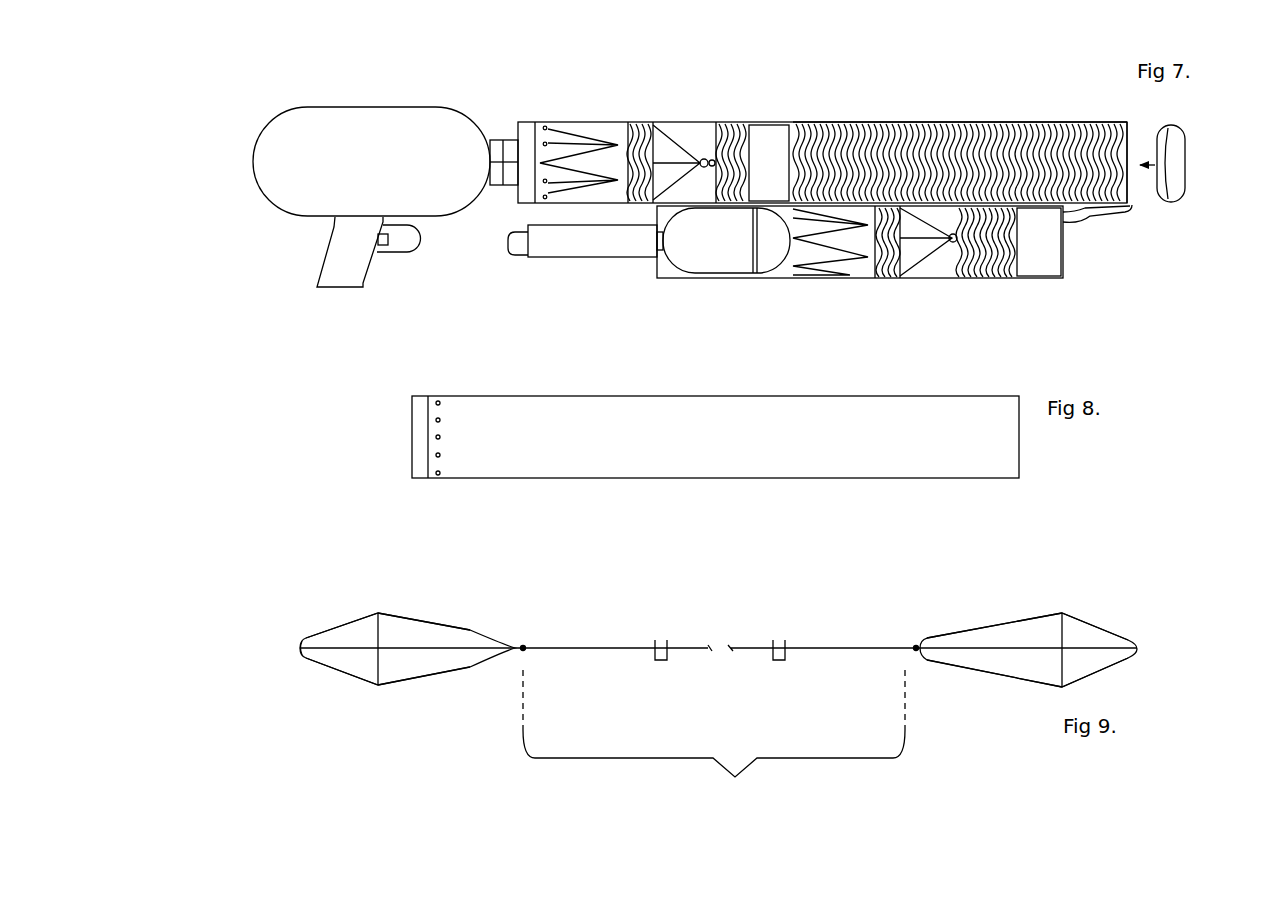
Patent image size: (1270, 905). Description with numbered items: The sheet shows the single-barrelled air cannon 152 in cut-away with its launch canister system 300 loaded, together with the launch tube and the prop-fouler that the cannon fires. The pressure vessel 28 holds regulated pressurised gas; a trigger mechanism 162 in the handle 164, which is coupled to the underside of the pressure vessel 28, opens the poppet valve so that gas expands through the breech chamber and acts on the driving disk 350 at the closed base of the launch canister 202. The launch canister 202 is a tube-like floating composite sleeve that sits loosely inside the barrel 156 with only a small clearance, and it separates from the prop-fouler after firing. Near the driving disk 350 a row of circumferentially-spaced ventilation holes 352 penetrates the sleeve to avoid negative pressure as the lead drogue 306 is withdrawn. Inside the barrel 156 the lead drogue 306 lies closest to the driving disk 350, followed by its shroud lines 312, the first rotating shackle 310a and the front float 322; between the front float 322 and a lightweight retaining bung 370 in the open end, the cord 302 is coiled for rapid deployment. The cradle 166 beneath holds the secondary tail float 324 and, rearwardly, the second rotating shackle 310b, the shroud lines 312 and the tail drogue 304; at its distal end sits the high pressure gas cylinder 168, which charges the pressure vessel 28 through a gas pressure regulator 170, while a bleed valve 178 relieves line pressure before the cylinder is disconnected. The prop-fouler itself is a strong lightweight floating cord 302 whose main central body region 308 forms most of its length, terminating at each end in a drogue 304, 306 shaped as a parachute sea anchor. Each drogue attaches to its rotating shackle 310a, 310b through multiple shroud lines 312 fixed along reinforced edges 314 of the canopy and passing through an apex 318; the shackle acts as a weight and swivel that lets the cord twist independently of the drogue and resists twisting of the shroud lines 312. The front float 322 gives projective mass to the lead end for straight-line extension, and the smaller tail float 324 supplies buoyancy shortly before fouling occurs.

In FIG. 7, the pressure vessel 28 is at (382, 133).
In FIG. 7, the launch canister system / prop-fouler 300 is at (553, 85).
In FIG. 7, the handle 164 is at (330, 283).
In FIG. 7, the trigger mechanism 162 is at (387, 253).
In FIG. 7, the bleed valve 178 is at (517, 248).
In FIG. 7, the gas pressure regulator 170 is at (572, 247).
In FIG. 7, the cradle (hopper) 166 is at (782, 283).
In FIG. 7, the high pressure gas cylinder 168 is at (712, 258).
In FIG. 7, the drogue (tail drogue) 304 is at (858, 263).
In FIG. 9, the drogue (tail drogue) 304 is at (355, 632).
In FIG. 7, the first rotating shackle 310a is at (702, 152).
In FIG. 7, the second rotating shackle 310b is at (953, 248).
In FIG. 9, the second rotating shackle 310b is at (526, 645).
In FIG. 7, the cord 302 is at (735, 125).
In FIG. 9, the cord 302 is at (608, 645).
In FIG. 7, the main central body region 308 is at (877, 133).
In FIG. 9, the main central body region 308 is at (714, 736).
In FIG. 7, the front float 322 is at (773, 137).
In FIG. 9, the front float 322 is at (786, 663).
In FIG. 7, the secondary tail float 324 is at (1053, 264).
In FIG. 9, the secondary tail float 324 is at (668, 663).
In FIG. 7, the barrel 152 is at (920, 124).
In FIG. 7, the barrel 156 is at (1030, 121).
In FIG. 7, the retaining bung 370 is at (1187, 160).
In FIG. 8, the launch canister (launch tube) 202 is at (643, 480).
In FIG. 8, the driving disk 350 is at (416, 431).
In FIG. 8, the ventilation holes 352 is at (443, 432).
In FIG. 9, the lead drogue 306 is at (1080, 634).
In FIG. 9, the shroud lines 312 is at (446, 631).
In FIG. 9, the reinforced edges (seams) 314 is at (333, 638).
In FIG. 9, the apex 318 is at (298, 654).